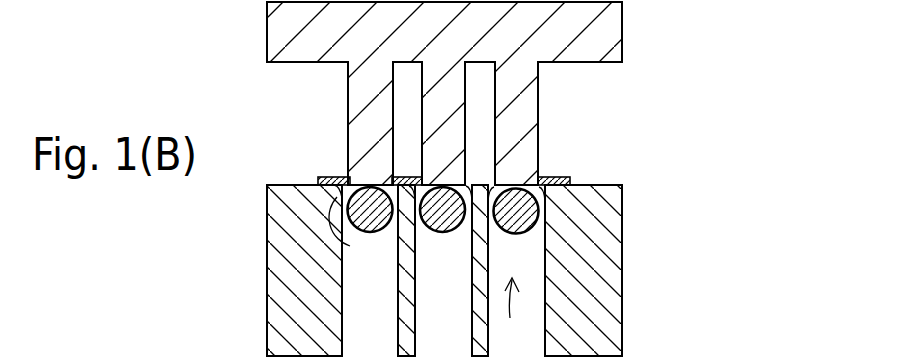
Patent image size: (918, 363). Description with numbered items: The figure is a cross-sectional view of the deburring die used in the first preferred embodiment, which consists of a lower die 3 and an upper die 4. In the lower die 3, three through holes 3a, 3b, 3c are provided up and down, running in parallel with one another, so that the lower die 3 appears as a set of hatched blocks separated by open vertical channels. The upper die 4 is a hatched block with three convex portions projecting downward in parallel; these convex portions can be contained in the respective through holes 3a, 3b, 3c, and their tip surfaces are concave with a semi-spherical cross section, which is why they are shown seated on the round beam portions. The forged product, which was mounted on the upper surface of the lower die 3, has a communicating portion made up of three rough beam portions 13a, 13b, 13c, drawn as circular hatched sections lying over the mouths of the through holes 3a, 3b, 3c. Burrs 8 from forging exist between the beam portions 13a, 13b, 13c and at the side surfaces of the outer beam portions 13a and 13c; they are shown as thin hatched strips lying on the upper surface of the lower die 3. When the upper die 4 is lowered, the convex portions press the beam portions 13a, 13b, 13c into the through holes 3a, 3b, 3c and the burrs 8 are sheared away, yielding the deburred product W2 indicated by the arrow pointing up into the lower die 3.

The upper die 4 is at (275, 33).
The lower die 3 is at (288, 262).
The burrs 8 is at (323, 176).
The through hole 3a is at (344, 252).
The through hole 3b is at (425, 250).
The through hole 3c is at (538, 182).
The beam portion 13a is at (371, 222).
The beam portion 13b is at (441, 222).
The beam portion 13c is at (517, 224).
The deburred product W2 is at (516, 318).